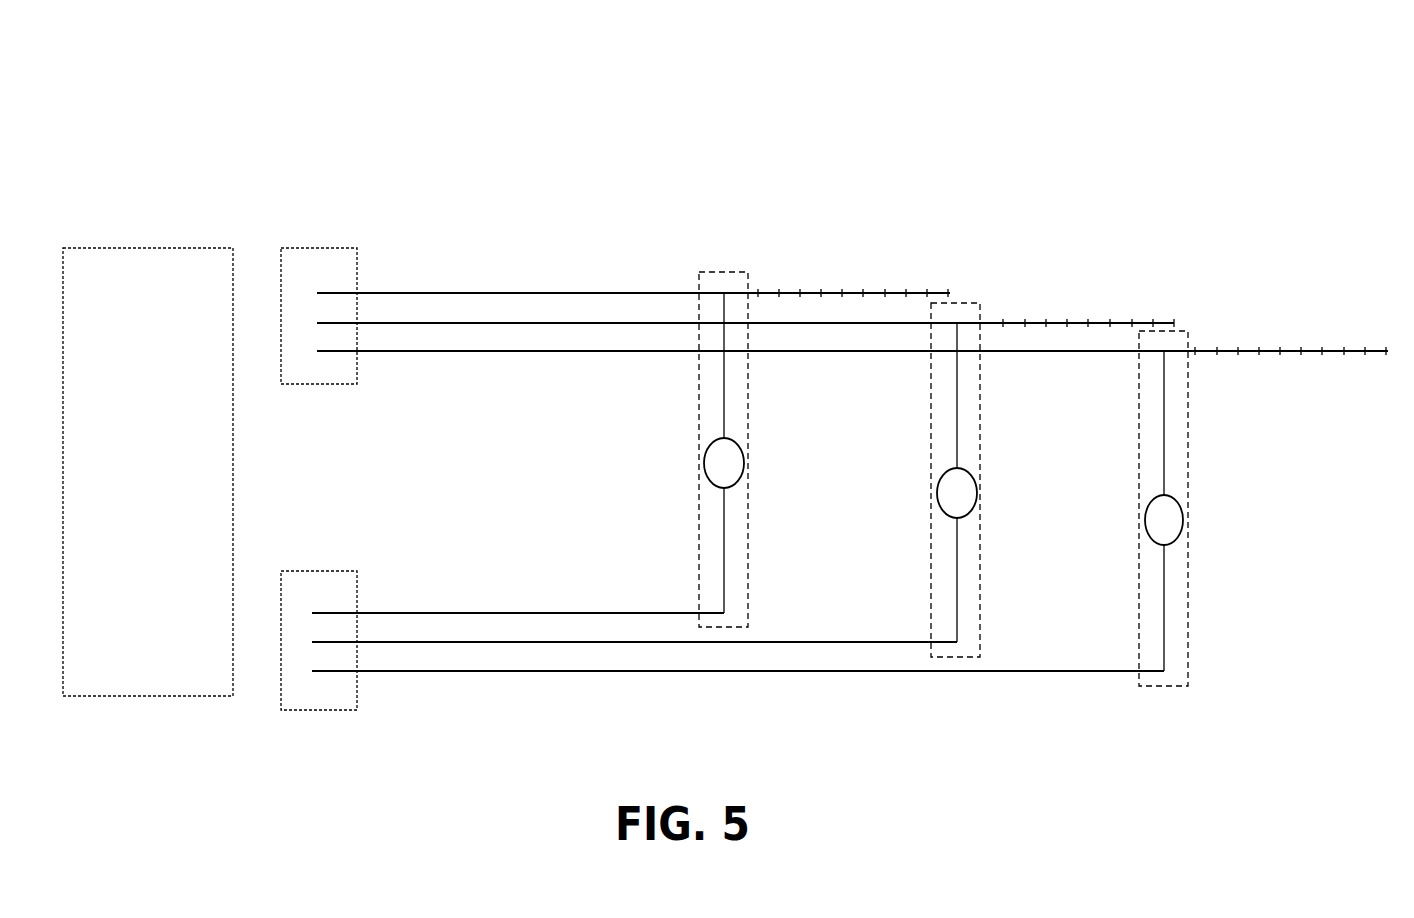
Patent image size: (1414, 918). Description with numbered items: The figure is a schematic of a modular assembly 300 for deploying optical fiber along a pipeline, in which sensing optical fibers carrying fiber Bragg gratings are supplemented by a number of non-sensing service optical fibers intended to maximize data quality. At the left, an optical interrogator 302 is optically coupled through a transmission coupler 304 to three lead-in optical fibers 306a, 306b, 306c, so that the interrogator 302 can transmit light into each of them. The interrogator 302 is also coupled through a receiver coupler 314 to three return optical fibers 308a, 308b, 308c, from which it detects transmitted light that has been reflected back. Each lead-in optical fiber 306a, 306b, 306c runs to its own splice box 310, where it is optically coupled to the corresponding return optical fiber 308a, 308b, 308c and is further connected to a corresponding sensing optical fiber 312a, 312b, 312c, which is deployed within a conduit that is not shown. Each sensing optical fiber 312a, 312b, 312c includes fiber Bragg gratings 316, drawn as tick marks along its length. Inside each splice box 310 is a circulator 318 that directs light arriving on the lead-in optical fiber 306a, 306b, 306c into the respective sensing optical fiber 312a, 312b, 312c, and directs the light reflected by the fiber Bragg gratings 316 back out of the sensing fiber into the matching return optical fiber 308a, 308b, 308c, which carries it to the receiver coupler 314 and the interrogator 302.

The modular assembly 300 is at (811, 101).
The optical interrogator 302 is at (147, 248).
The transmission coupler 304 is at (322, 248).
The lead-in optical fiber 306a is at (437, 293).
The lead-in optical fiber 306b is at (521, 323).
The lead-in optical fiber 306c is at (583, 352).
The return optical fiber 308a is at (437, 613).
The return optical fiber 308b is at (521, 642).
The return optical fiber 308c is at (585, 672).
The splice box 310 is at (749, 398).
The sensing optical fiber 312a is at (815, 293).
The sensing optical fiber 312b is at (1040, 323).
The sensing optical fiber 312c is at (1249, 351).
The receiver coupler 314 is at (322, 571).
The fiber Bragg gratings 316 is at (929, 293).
The circulator 318 is at (733, 456).